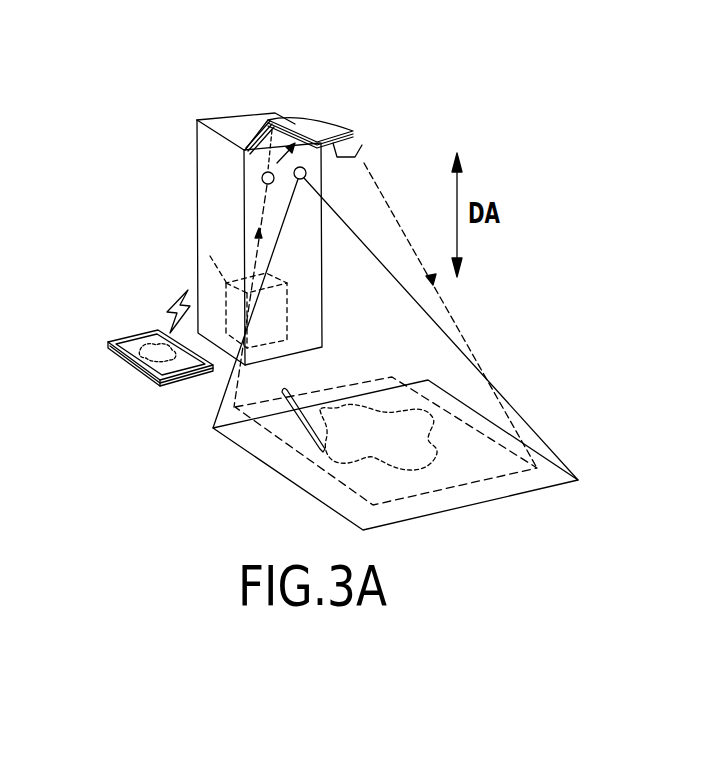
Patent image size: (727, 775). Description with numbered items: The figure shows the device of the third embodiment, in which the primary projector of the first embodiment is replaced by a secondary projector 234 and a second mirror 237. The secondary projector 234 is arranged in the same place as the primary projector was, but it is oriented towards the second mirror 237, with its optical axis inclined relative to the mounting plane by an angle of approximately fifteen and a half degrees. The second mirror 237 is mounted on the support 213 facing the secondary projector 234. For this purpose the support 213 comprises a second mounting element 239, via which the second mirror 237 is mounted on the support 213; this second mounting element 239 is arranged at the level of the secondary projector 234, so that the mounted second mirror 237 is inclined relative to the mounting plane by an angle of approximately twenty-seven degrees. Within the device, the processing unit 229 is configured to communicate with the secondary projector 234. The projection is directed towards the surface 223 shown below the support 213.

The support 213 is at (208, 210).
The projection surface / sheet 223 is at (298, 467).
The processing unit 229 is at (210, 256).
The secondary projector 234 is at (262, 178).
The second mirror 237 is at (360, 151).
The second mounting element 239 is at (312, 114).